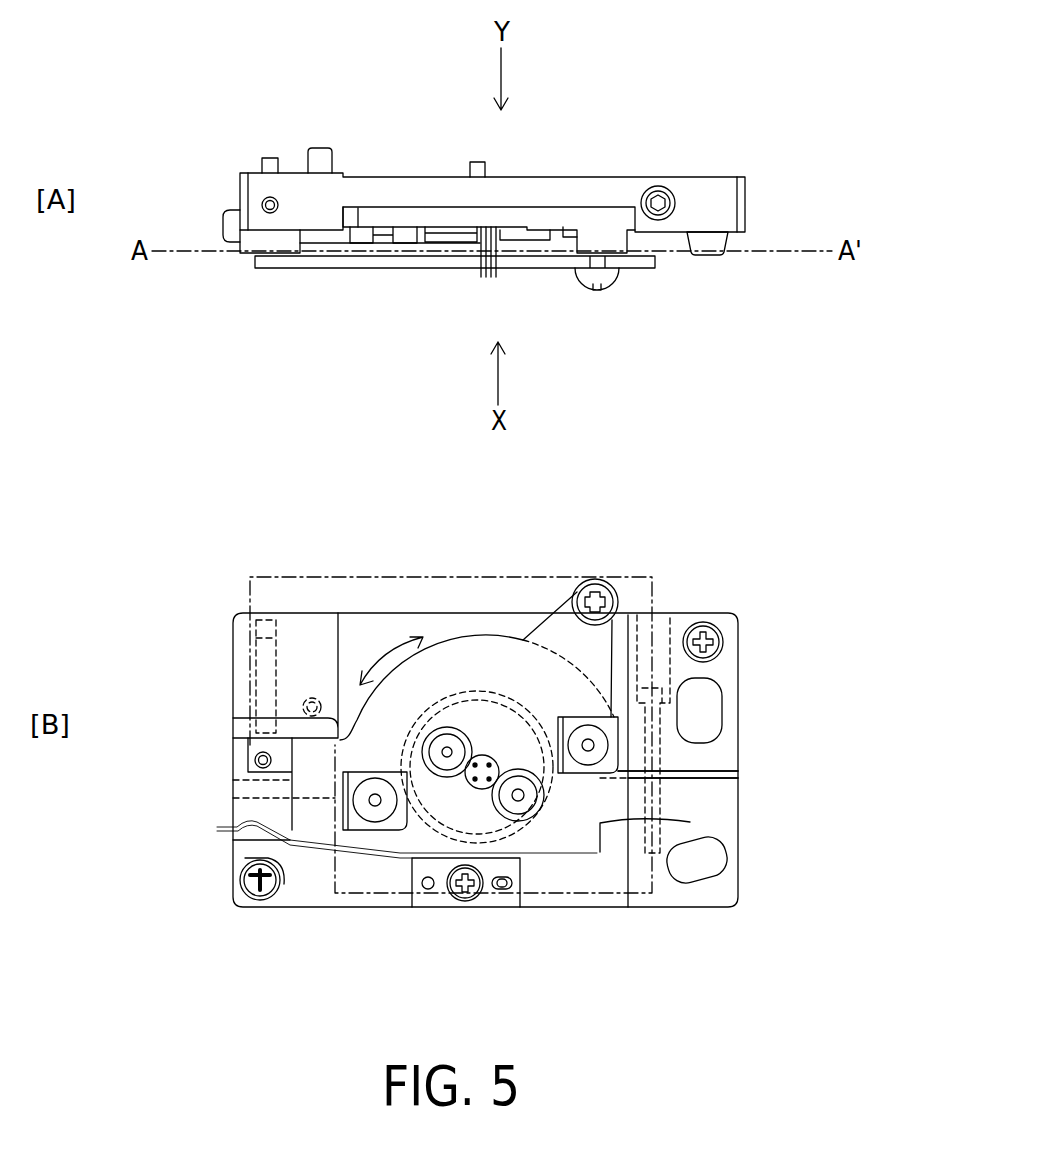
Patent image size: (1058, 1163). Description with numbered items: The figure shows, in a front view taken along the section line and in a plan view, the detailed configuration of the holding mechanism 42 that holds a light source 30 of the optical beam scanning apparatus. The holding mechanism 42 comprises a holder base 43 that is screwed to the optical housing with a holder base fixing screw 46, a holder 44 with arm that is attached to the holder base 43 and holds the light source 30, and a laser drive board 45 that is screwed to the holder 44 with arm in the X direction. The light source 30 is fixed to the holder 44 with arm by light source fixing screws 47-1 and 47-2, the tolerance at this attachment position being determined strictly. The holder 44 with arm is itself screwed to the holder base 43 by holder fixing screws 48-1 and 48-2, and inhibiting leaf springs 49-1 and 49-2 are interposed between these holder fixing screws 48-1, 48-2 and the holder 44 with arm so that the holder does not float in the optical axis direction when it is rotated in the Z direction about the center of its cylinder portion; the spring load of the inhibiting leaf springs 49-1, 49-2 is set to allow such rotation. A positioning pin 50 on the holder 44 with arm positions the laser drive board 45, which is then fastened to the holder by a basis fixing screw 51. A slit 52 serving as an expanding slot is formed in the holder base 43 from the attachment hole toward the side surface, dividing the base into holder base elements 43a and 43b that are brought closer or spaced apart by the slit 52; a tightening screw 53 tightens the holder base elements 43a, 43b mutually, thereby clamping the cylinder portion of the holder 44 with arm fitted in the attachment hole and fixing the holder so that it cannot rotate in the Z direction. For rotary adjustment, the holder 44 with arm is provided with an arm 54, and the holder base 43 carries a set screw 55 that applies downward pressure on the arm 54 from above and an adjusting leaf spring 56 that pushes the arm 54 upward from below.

The light source 30 is at (482, 277).
The holding mechanism 42 is at (746, 130).
The holder base 43 is at (571, 177).
The holder base element 43a is at (738, 757).
The holder base element 43b is at (738, 792).
The holder with arm 44 is at (436, 207).
The laser drive board 45 is at (555, 268).
The holder base fixing screw 46 is at (707, 256).
The light source fixing screw 47-1 is at (516, 797).
The light source fixing screw 47-2 is at (447, 745).
The holder fixing screw 48-1 is at (600, 775).
The holder fixing screw 48-2 is at (360, 830).
The inhibiting leaf spring 49-1 is at (560, 775).
The inhibiting leaf spring 49-2 is at (388, 822).
The positioning pin 50 is at (253, 760).
The basis fixing screw 51 is at (613, 285).
The slit 52 is at (717, 758).
The tightening screw 53 is at (658, 186).
The arm for rotary adjustment 54 is at (258, 792).
The set screw 55 is at (262, 203).
The adjusting leaf spring 56 is at (222, 833).